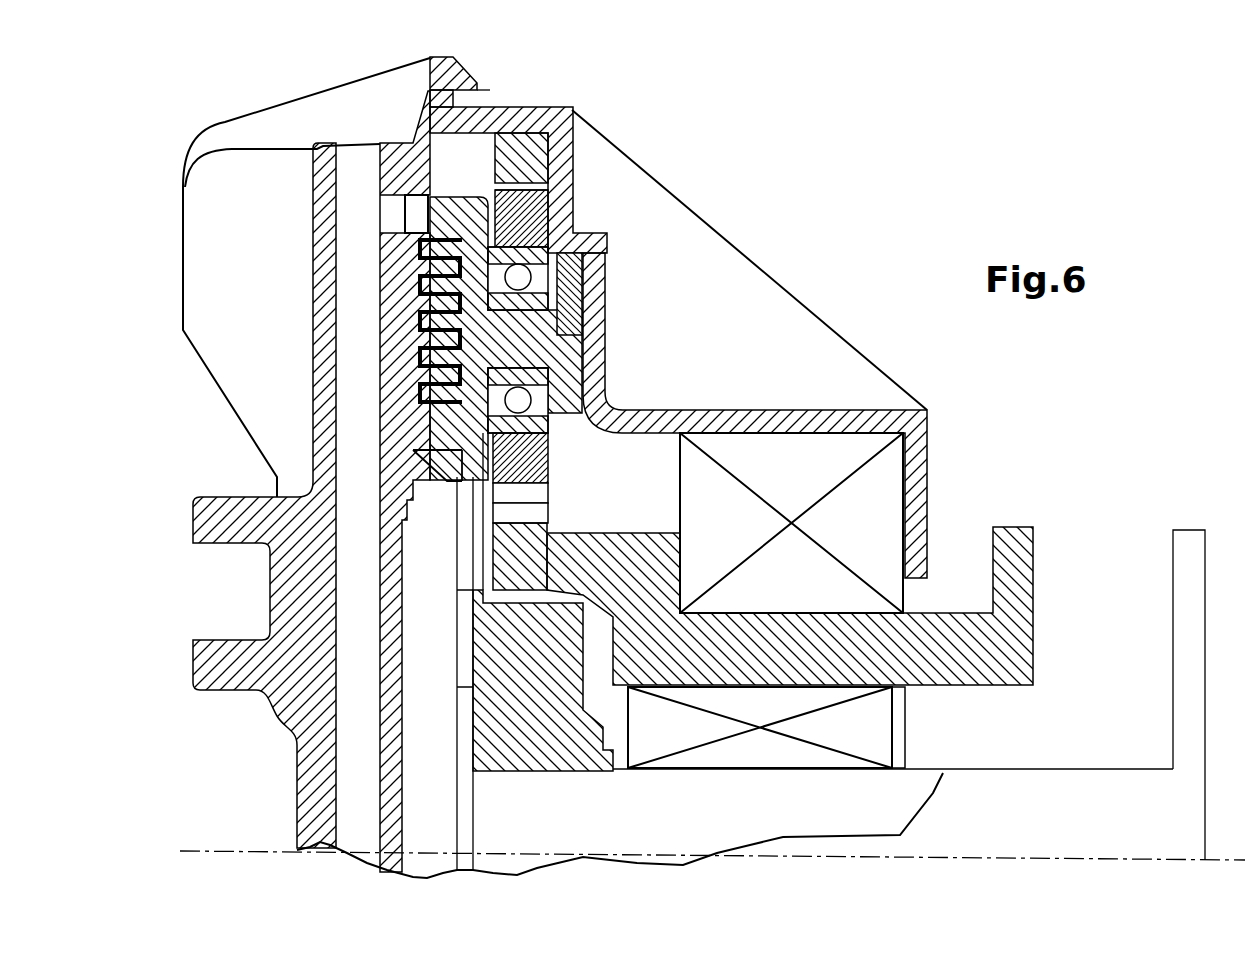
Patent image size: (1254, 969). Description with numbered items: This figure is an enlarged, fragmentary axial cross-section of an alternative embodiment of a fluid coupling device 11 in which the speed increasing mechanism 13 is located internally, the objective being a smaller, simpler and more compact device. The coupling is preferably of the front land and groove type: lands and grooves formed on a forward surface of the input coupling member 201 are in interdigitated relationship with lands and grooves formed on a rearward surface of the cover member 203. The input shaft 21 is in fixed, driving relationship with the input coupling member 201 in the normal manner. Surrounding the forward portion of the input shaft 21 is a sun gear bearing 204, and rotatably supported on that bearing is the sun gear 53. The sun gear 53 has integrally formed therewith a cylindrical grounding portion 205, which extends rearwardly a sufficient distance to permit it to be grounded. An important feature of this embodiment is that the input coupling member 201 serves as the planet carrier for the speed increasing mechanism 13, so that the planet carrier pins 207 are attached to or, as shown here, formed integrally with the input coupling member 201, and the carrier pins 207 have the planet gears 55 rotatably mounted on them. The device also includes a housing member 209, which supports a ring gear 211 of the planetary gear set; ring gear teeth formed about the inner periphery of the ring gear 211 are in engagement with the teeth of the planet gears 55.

The fluid coupling device 11 is at (324, 88).
The speed increasing mechanism 13 is at (563, 428).
The input shaft 21 is at (1050, 817).
The sun gear 53 is at (523, 536).
The planet gears 55 is at (530, 462).
The input coupling member 201 is at (493, 632).
The cover member 203 is at (323, 418).
The sun gear bearing 204 is at (753, 738).
The cylindrical grounding portion 205 is at (988, 653).
The planet carrier pins 207 is at (560, 340).
The housing member 209 is at (567, 147).
The ring gear 211 is at (528, 158).